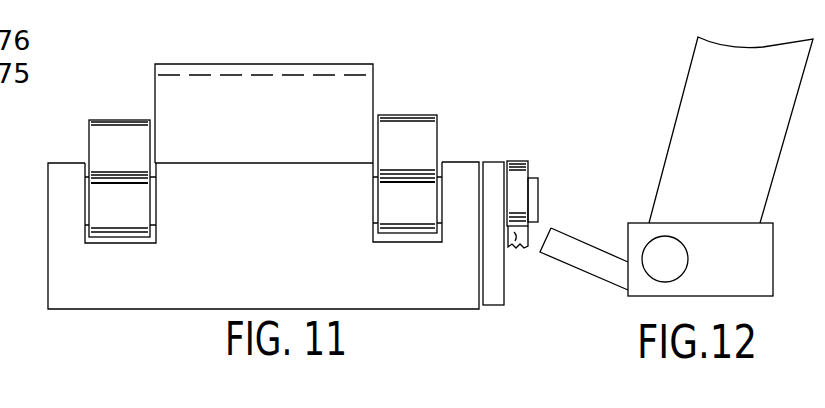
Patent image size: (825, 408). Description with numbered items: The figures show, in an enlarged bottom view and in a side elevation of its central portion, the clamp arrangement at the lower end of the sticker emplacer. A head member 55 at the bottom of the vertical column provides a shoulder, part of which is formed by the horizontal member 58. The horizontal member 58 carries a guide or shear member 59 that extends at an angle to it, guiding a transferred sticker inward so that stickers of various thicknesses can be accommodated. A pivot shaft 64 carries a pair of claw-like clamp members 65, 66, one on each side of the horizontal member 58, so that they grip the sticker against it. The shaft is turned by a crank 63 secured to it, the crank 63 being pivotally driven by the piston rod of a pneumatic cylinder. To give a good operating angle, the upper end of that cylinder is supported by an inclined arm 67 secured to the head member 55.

In FIG. 12, the head member 55 is at (715, 288).
In FIG. 11, the horizontal member 58 is at (277, 257).
In FIG. 11, the guide or shear member 59 is at (255, 77).
In FIG. 12, the guide or shear member 59 is at (588, 252).
In FIG. 11, the crank 63 is at (520, 243).
In FIG. 11, the pivot shaft 64 is at (563, 152).
In FIG. 11, the claw-like clamp member 65 is at (412, 132).
In FIG. 11, the claw-like clamp member 66 is at (128, 133).
In FIG. 12, the inclined arm 67 is at (684, 137).